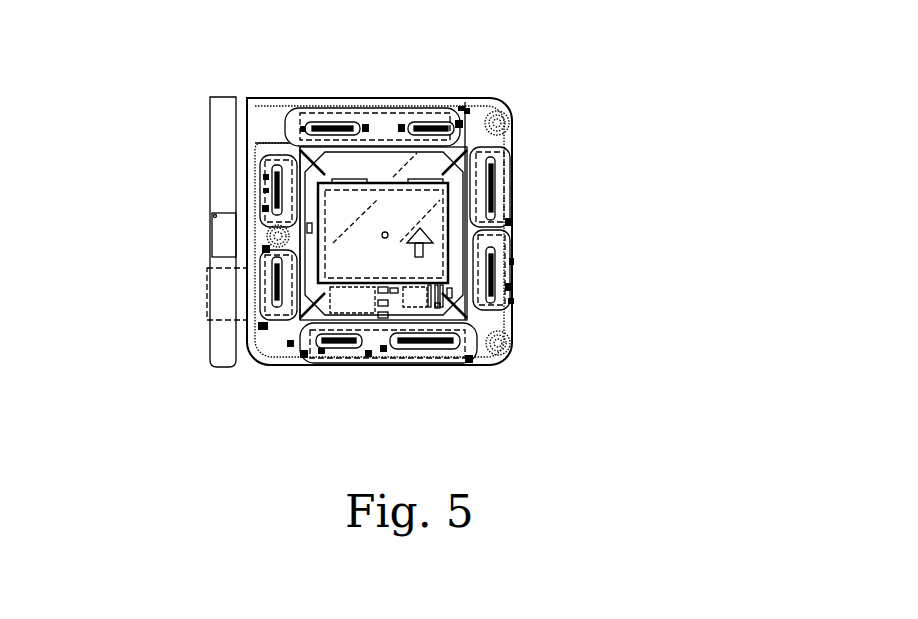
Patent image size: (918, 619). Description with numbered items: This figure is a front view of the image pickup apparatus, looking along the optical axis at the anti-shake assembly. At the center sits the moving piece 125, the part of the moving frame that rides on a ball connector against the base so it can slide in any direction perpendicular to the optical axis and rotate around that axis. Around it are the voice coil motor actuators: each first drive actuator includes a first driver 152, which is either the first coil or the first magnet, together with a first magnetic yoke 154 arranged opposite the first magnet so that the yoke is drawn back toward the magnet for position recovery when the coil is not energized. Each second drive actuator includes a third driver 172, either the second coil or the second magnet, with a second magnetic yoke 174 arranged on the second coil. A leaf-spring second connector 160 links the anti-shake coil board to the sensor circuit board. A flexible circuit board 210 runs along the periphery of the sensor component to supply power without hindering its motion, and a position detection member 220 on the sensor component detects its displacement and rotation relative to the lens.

The moving piece 125 is at (520, 110).
The first driver 152 is at (355, 118).
The first magnetic yoke 154 is at (318, 116).
The second connector 160 is at (282, 125).
The third driver 172 is at (470, 110).
The second magnetic yoke 174 is at (462, 110).
The flexible circuit board 210 is at (221, 327).
The position detection member 220 is at (370, 118).